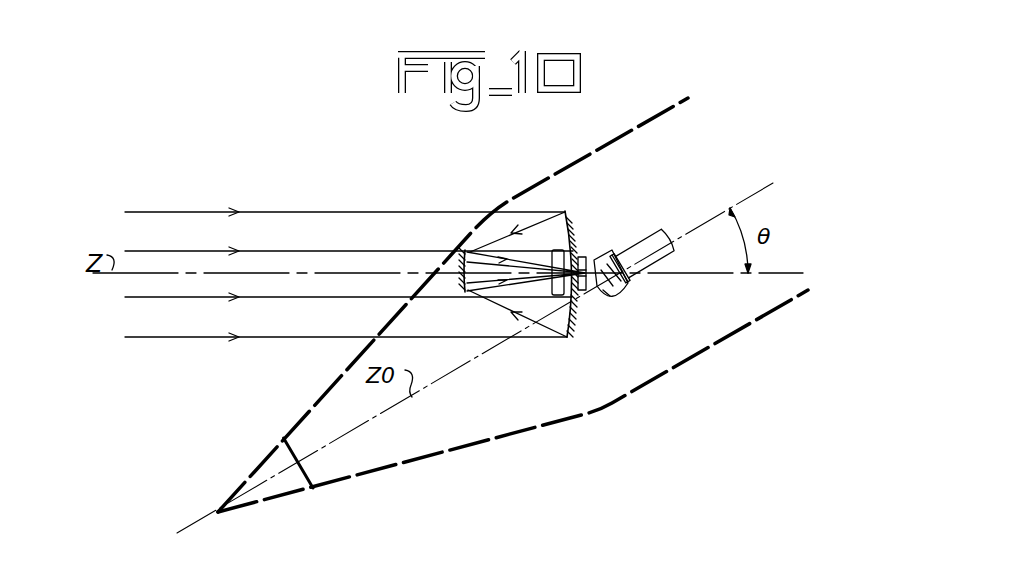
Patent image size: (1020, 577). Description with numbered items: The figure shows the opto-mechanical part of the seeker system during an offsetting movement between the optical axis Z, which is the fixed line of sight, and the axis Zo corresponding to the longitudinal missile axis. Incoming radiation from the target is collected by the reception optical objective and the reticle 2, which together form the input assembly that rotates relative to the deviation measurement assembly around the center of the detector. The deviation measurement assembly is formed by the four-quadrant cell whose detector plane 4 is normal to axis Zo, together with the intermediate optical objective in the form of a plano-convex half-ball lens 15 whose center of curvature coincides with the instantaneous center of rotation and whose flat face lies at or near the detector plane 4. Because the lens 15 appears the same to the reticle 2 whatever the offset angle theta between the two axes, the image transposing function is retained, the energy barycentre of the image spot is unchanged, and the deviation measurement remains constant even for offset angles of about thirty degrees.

The reticle 2 is at (587, 257).
The detector plane 4 is at (648, 241).
The plano-convex lens 15 is at (611, 300).